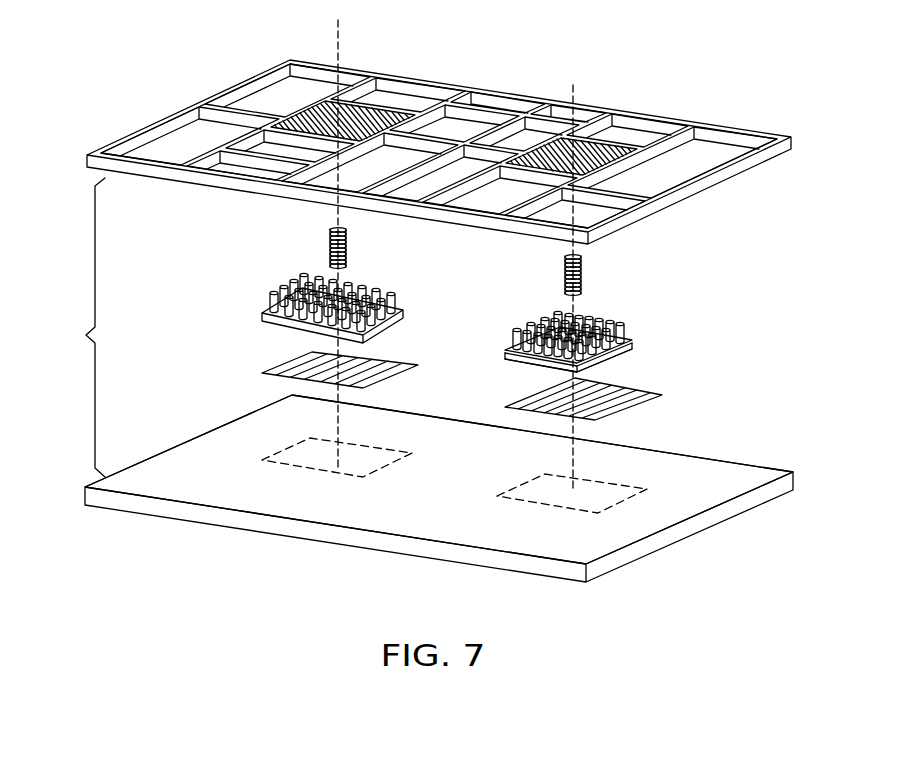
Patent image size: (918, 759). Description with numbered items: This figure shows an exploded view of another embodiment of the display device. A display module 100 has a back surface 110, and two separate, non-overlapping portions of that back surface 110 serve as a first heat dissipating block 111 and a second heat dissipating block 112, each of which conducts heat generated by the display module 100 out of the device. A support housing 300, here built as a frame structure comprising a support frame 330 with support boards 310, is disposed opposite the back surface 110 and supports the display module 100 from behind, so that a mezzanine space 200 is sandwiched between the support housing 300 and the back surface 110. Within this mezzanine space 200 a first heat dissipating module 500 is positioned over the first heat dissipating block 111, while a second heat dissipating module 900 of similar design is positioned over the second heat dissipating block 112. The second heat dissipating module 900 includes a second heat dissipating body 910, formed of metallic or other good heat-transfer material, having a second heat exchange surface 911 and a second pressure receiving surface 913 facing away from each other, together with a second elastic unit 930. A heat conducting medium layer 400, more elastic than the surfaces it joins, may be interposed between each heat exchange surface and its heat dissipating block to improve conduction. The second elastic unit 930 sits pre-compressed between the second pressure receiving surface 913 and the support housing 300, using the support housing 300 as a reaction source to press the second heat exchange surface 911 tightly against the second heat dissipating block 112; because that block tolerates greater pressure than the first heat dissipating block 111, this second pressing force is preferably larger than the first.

The display module 100 is at (451, 507).
The back surface 110 is at (720, 473).
The first heat dissipating block 111 is at (295, 465).
The second heat dissipating block 112 is at (548, 503).
The mezzanine space 200 is at (75, 327).
The support housing 300 is at (439, 133).
The support board 310 is at (680, 67).
The support frame 330 is at (492, 98).
The heat conducting medium layer 400 is at (293, 362).
The first heat dissipating module 500 is at (271, 275).
The second heat dissipating module 900 is at (627, 332).
The second heat dissipating body 910 is at (630, 343).
The second heat exchange surface 911 is at (627, 358).
The second pressure receiving surface 913 is at (634, 333).
The second elastic unit 930 is at (585, 268).